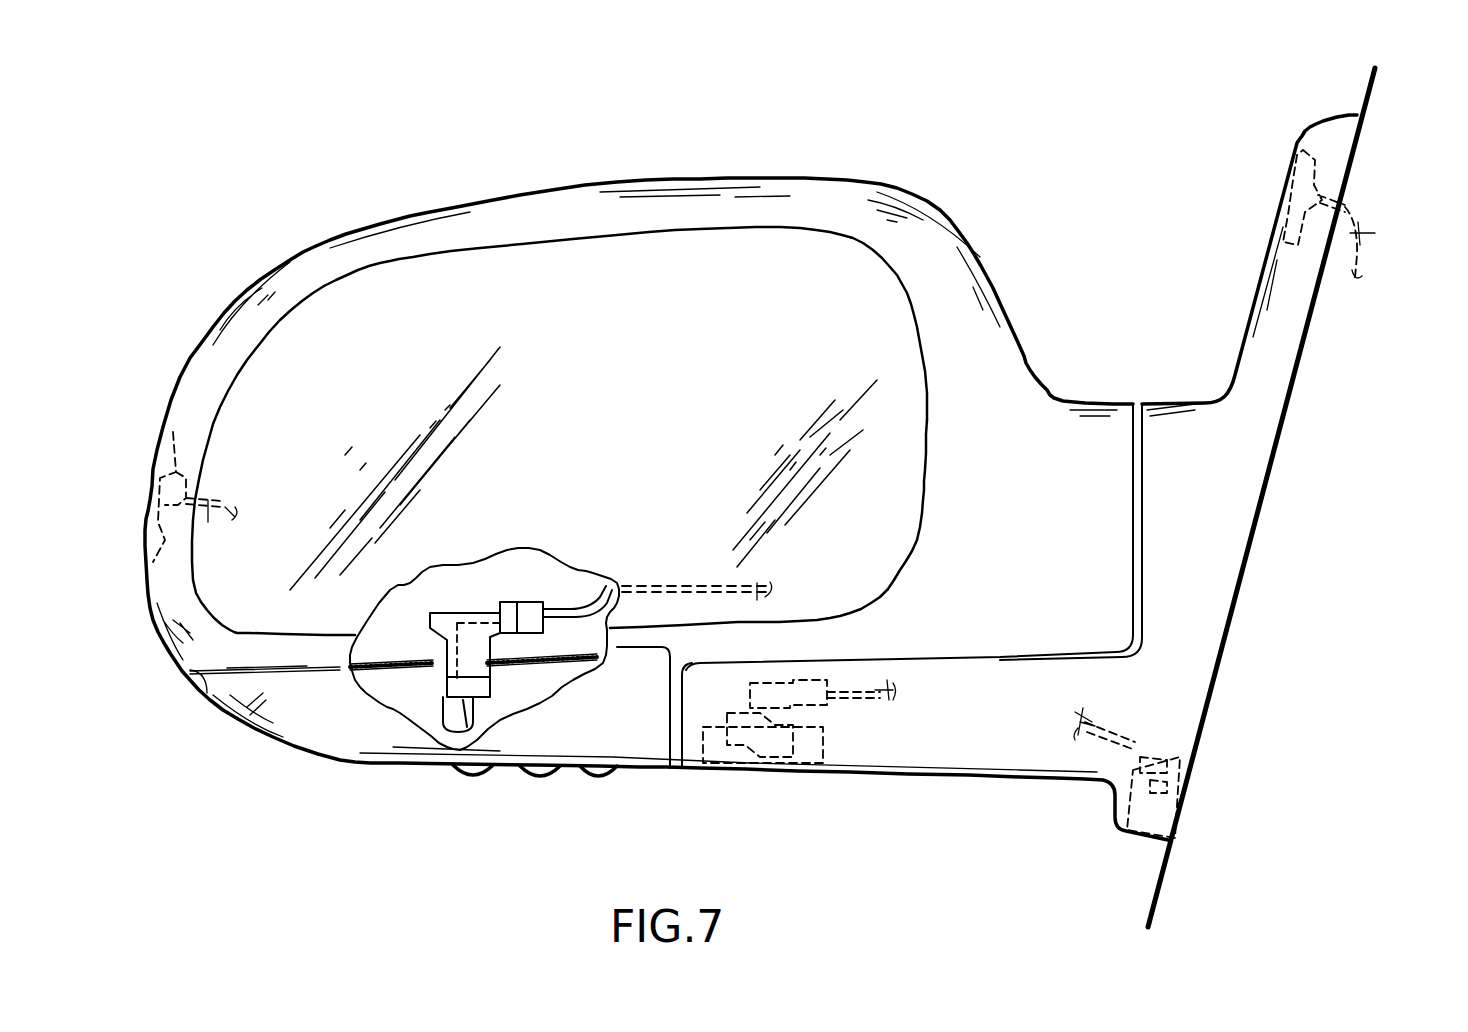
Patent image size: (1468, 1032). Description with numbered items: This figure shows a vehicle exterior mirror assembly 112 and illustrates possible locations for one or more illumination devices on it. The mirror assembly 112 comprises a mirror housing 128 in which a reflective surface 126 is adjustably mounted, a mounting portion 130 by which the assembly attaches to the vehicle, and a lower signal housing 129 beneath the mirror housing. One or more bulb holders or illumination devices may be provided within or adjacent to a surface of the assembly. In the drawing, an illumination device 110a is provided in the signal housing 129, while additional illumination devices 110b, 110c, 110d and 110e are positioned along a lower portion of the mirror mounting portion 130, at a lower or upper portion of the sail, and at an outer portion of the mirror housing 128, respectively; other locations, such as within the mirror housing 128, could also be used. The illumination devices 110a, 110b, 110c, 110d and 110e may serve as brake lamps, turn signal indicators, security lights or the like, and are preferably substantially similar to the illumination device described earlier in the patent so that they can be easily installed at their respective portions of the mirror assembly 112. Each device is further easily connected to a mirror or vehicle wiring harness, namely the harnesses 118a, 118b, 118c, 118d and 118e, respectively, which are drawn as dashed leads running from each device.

The mirror assembly 112 is at (492, 127).
The reflective surface 126 is at (578, 293).
The mirror housing 128 is at (718, 200).
The lower signal housing 129 is at (362, 738).
The mounting portion 130 is at (975, 753).
The illumination device 110a is at (417, 612).
The illumination device 110b is at (748, 690).
The illumination device 110c is at (1168, 752).
The illumination device 110d is at (1312, 195).
The illumination device 110e is at (170, 489).
The wiring harness 118a is at (567, 590).
The wiring harness 118b is at (877, 695).
The wiring harness 118c is at (1088, 733).
The wiring harness 118d is at (1362, 234).
The wiring harness 118e is at (207, 513).